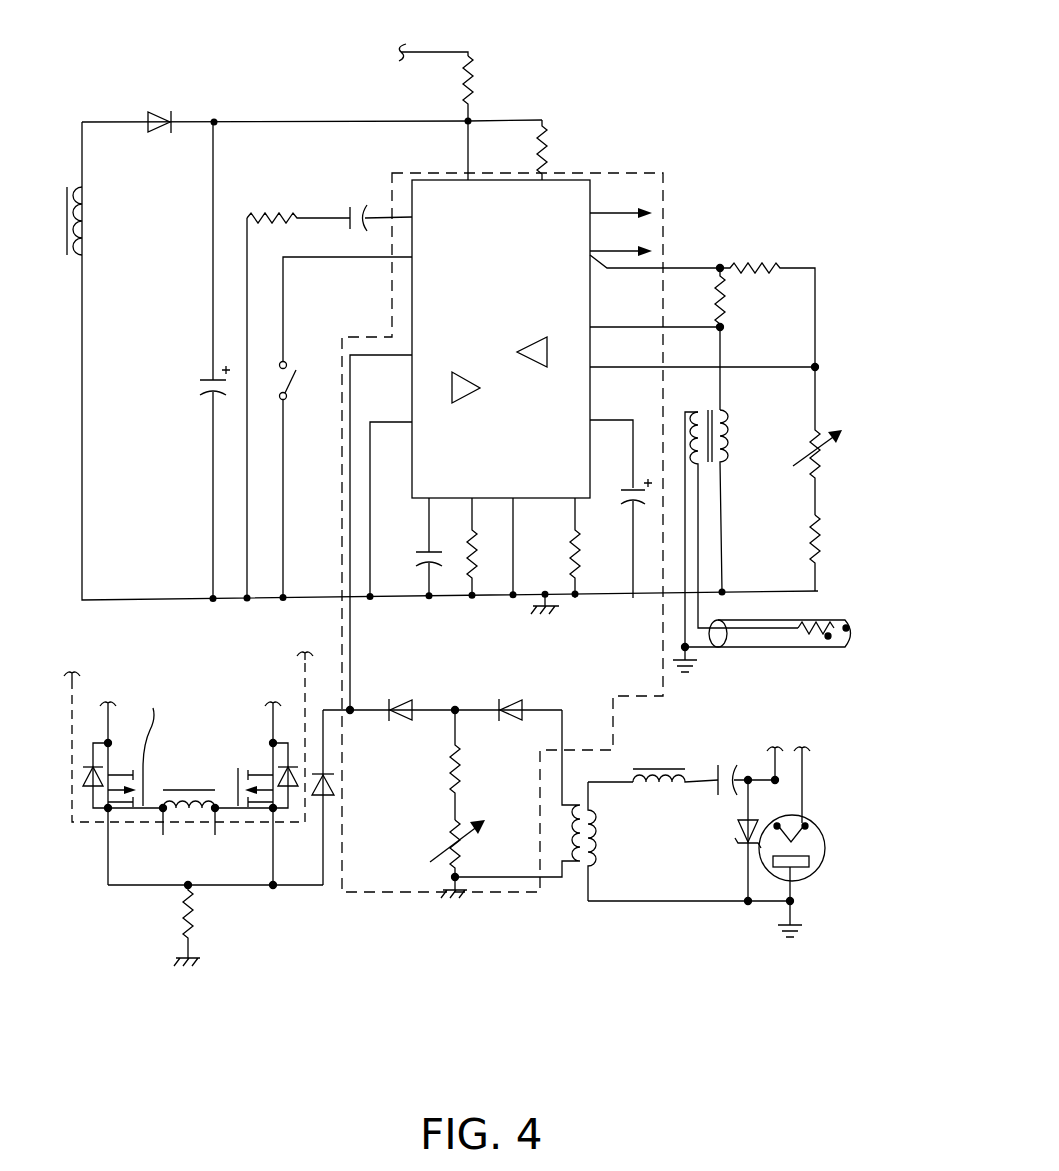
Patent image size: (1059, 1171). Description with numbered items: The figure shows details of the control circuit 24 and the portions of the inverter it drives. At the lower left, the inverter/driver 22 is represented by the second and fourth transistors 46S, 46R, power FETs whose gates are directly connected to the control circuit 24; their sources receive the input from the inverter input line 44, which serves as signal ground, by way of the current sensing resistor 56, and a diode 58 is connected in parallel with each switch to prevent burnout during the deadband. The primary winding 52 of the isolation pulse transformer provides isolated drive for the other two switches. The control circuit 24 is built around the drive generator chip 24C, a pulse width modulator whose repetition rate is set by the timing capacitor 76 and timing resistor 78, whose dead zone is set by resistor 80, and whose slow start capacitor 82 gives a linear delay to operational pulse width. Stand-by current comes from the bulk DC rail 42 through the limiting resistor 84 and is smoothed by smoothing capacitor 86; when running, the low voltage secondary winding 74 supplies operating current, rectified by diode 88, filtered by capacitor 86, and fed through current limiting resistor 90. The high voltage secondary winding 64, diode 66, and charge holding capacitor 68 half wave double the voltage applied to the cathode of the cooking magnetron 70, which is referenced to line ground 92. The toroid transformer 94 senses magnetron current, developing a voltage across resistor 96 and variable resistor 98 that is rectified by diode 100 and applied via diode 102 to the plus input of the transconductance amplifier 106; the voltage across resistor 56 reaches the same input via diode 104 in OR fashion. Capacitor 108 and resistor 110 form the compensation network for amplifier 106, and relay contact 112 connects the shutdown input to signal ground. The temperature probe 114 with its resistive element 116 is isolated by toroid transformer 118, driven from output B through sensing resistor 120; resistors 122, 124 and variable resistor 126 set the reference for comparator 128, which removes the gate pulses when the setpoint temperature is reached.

The inverter/driver 22 is at (97, 826).
The control circuit 24 is at (625, 170).
The drive generator chip 24C is at (602, 205).
The inverter input line 42 is at (432, 50).
The inverter input line 44 is at (113, 600).
The second transistor 46S is at (144, 791).
The fourth transistor 46R is at (240, 772).
The primary winding 52 is at (172, 789).
The resistor 56 is at (184, 912).
The diode 58 is at (86, 763).
The high voltage secondary winding 64 is at (670, 783).
The diode 66 is at (742, 832).
The charge holding capacitor 68 is at (716, 782).
The cooking magnetron 70 is at (812, 833).
The secondary winding 74 is at (84, 218).
The timing capacitor 76 is at (425, 550).
The timing resistor 78 is at (470, 545).
The resistor 80 is at (573, 546).
The slow start capacitor 82 is at (629, 485).
The limiting resistor 84 is at (462, 75).
The smoothing capacitor 86 is at (211, 396).
The diode 88 is at (155, 130).
The current limiting resistor 90 is at (548, 152).
The line ground 92 is at (690, 652).
The toroid transformer 94 is at (591, 826).
The resistor 96 is at (463, 758).
The variable resistor 98 is at (434, 868).
The diode 100 is at (517, 699).
The diode 102 is at (400, 697).
The diode 104 is at (328, 794).
The transconductance amplifier 106 is at (482, 390).
The capacitor 108 is at (352, 224).
The resistor 110 is at (290, 212).
The relay contact 112 is at (292, 376).
The temperature probe 114 is at (826, 648).
The temperature dependent resistive element 116 is at (810, 622).
The toroid transformer 118 is at (724, 432).
The resistor 120 is at (729, 300).
The resistor 122 is at (755, 263).
The resistor 124 is at (820, 532).
The variable resistor 126 is at (820, 430).
The comparator 128 is at (530, 340).